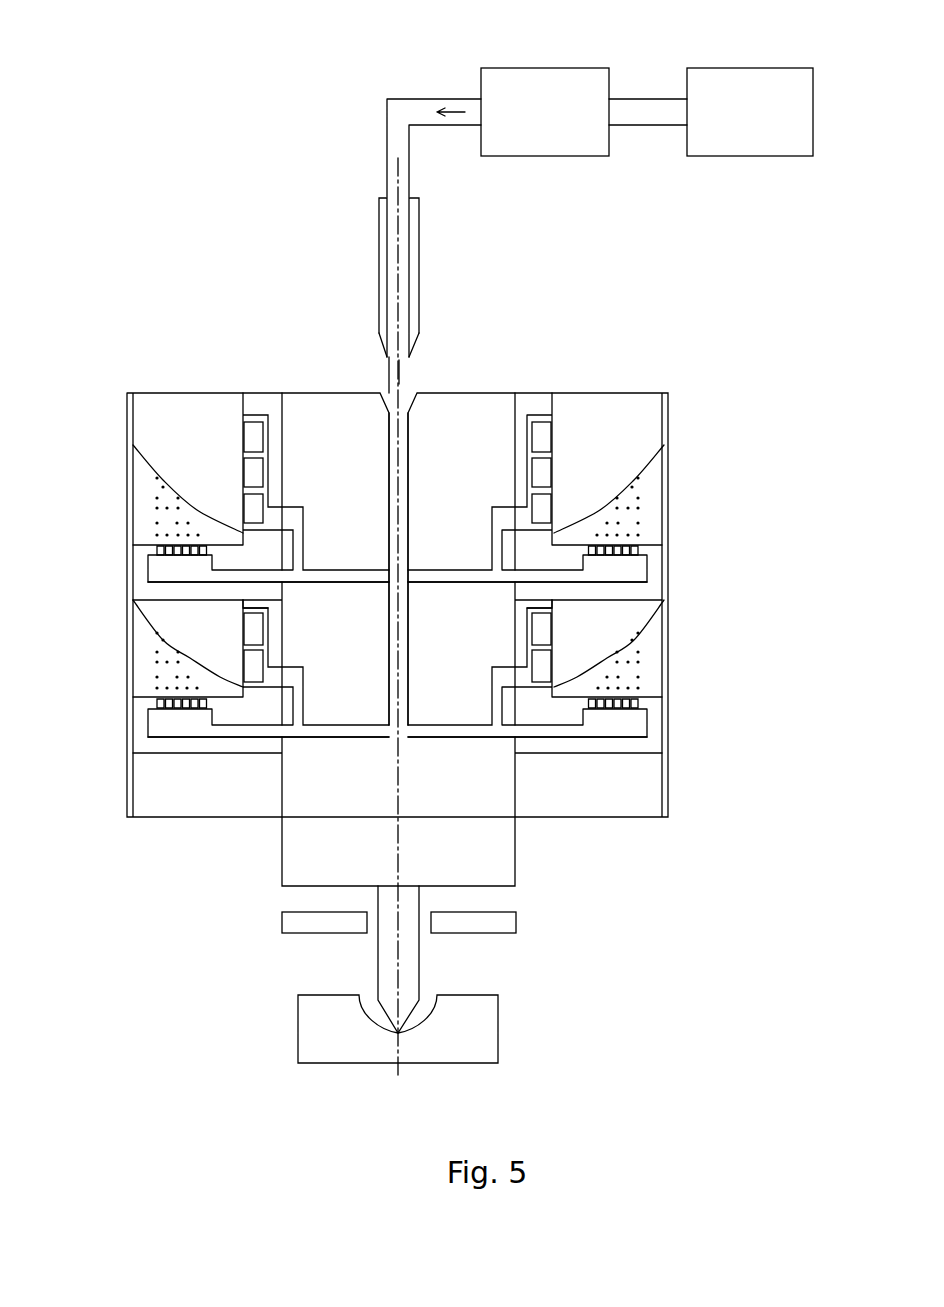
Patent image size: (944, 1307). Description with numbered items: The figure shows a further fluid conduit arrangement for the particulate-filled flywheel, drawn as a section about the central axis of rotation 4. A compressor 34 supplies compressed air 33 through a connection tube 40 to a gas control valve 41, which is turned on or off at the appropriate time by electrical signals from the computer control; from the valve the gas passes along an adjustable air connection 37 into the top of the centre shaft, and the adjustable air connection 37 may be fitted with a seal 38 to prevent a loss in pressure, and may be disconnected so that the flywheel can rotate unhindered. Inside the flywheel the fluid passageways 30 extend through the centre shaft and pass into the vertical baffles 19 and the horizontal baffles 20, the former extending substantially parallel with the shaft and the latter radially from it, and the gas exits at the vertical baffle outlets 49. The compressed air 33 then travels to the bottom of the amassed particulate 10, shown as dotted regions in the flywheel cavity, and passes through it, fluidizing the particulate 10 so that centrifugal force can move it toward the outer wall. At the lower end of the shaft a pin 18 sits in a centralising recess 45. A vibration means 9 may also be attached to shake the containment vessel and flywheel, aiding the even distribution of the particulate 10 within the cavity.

The central axis of rotation 4 is at (400, 383).
The vibration means 9 is at (517, 922).
The particulate 10 is at (157, 523).
The pin 18 is at (419, 990).
The vertical baffles 19 is at (260, 603).
The horizontal baffles 20 is at (653, 563).
The fluid passageways 30 is at (397, 497).
The compressed air 33 is at (419, 112).
The compressor 34 is at (753, 108).
The adjustable air connection 37 is at (378, 268).
The seal 38 is at (385, 348).
The connection tube 40 is at (653, 108).
The gas control valve 41 is at (547, 112).
The centralising recess 45 is at (398, 1033).
The vertical baffle outlets 49 is at (547, 420).